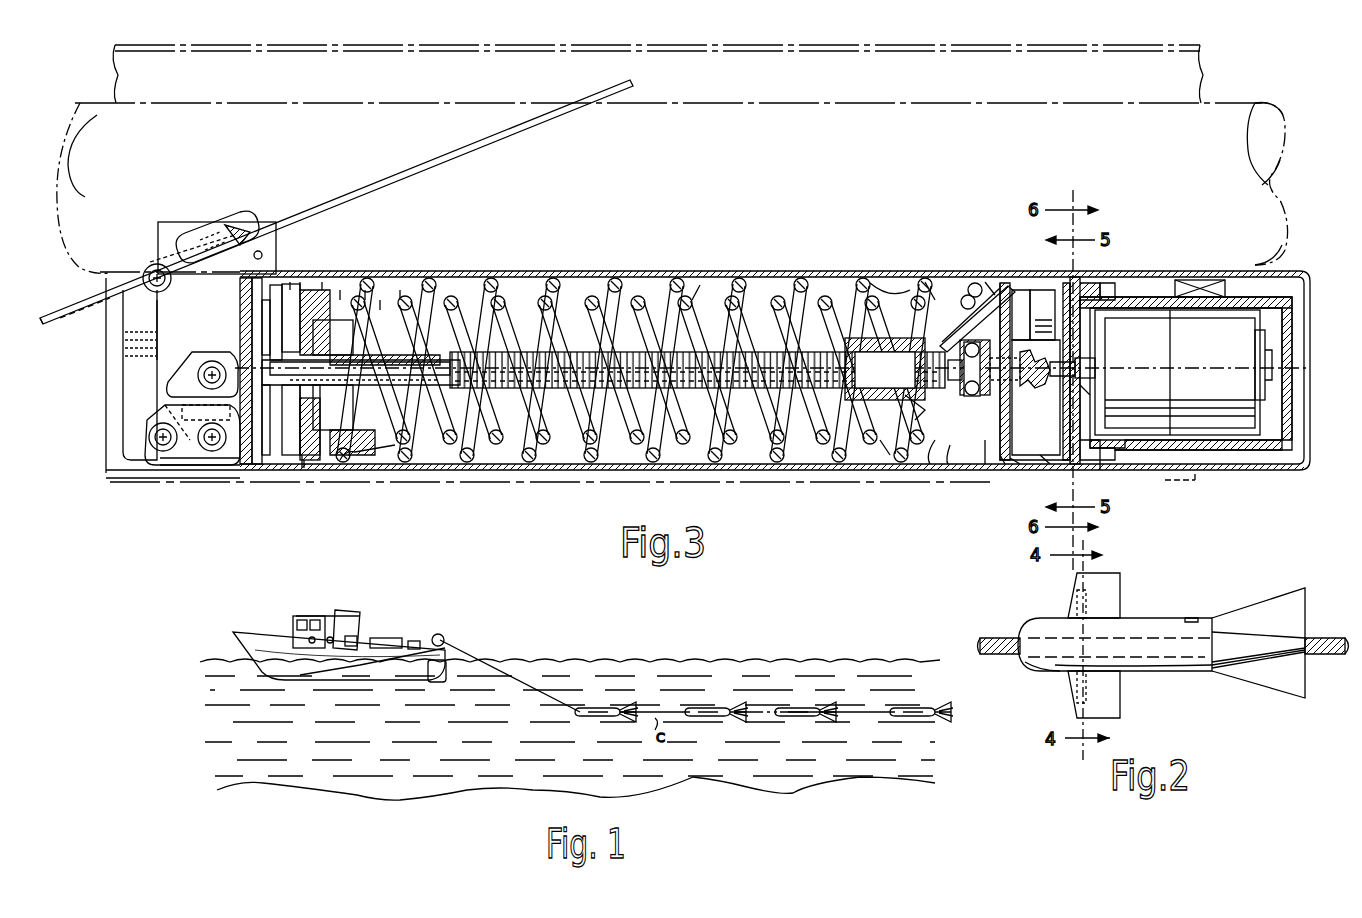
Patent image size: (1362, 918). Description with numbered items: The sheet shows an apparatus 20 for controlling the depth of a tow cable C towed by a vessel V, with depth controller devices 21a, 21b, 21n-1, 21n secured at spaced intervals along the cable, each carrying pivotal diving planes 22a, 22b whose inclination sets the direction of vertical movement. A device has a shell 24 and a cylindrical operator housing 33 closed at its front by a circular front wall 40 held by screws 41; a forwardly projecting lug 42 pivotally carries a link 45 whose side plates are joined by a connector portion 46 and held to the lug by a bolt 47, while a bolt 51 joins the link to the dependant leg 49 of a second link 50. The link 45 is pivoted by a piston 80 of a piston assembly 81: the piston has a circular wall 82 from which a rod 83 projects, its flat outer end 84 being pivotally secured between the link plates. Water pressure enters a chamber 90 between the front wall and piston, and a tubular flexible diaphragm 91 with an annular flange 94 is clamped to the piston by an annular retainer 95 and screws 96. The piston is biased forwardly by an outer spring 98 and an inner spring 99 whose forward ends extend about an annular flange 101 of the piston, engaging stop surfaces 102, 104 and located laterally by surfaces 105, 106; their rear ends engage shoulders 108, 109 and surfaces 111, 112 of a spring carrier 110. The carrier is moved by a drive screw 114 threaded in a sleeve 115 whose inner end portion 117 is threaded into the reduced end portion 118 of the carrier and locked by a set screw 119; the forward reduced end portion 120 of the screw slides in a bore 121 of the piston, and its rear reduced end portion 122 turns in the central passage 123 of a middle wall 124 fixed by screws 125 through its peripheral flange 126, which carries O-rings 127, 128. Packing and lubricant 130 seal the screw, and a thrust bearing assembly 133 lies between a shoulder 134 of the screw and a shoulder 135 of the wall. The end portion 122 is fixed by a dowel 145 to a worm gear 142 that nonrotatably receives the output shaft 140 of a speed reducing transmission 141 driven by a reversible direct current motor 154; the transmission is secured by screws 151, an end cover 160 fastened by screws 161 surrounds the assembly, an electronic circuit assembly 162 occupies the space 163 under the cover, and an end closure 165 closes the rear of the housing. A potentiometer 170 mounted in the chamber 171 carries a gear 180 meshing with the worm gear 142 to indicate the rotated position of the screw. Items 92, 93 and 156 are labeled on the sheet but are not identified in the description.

In FIG. 3, the tow cable C is at (1210, 120).
In FIG. 1, the apparatus 20 is at (487, 645).
In FIG. 1, the depth controller device 21a is at (600, 718).
In FIG. 1, the depth controller device 21b is at (705, 718).
In FIG. 1, the depth controller device 21n-1 is at (798, 718).
In FIG. 1, the depth controller device 21n is at (910, 718).
In FIG. 1, the towing vessel V is at (255, 630).
In FIG. 3, the diving plane 22a is at (322, 210).
In FIG. 2, the diving plane 22a is at (1120, 590).
In FIG. 2, the diving plane 22b is at (1120, 704).
In FIG. 2, the gear 180 is at (1045, 660).
In FIG. 3, the shell 24 is at (203, 492).
In FIG. 3, the cylindrical operator housing 33 is at (593, 472).
In FIG. 3, the front bulkhead 40 is at (258, 472).
In FIG. 3, the screws 41 is at (272, 472).
In FIG. 3, the forwardly projecting lug 42 is at (234, 474).
In FIG. 3, the link 45 is at (180, 395).
In FIG. 3, the connector portion 46 is at (158, 422).
In FIG. 3, the bolt 47 is at (205, 452).
In FIG. 3, the dependant leg 49 is at (118, 398).
In FIG. 3, the link 50 is at (118, 328).
In FIG. 3, the bolt 51 is at (155, 448).
In FIG. 3, the piston 80 is at (318, 470).
In FIG. 3, the piston assembly 81 is at (303, 480).
In FIG. 3, the circular wall 82 is at (313, 412).
In FIG. 3, the piston rod 83 is at (262, 360).
In FIG. 3, the flat outer end 84 is at (212, 358).
In FIG. 3, the chamber 90 is at (296, 284).
In FIG. 3, the tubular flexible diaphragm 91 is at (310, 284).
In FIG. 3, the plate 92 is at (268, 295).
In FIG. 3, the bearing 93 is at (305, 322).
In FIG. 3, the annular flange 94 is at (328, 284).
In FIG. 3, the annular retainer 95 is at (301, 420).
In FIG. 3, the screws 96 is at (292, 456).
In FIG. 3, the outer spring 98 is at (676, 282).
In FIG. 3, the inner spring 99 is at (695, 300).
In FIG. 3, the annular flange 101 is at (333, 337).
In FIG. 3, the outer annular stop surface 102 is at (352, 290).
In FIG. 3, the inner annular stop surface 104 is at (402, 288).
In FIG. 3, the annular surface 105 is at (375, 290).
In FIG. 3, the annular surface 106 is at (372, 310).
In FIG. 3, the shoulder 108 is at (994, 282).
In FIG. 3, the shoulder 109 is at (965, 295).
In FIG. 3, the spring carrier 110 is at (953, 320).
In FIG. 3, the surface 111 is at (976, 282).
In FIG. 3, the surface 112 is at (935, 290).
In FIG. 3, the drive screw 114 is at (748, 397).
In FIG. 3, the sleeve 115 is at (873, 442).
In FIG. 3, the inner end portion 117 is at (925, 410).
In FIG. 3, the inner reduced end portion 118 is at (900, 332).
In FIG. 3, the set screw 119 is at (890, 288).
In FIG. 3, the forward reduced end portion 120 is at (367, 450).
In FIG. 3, the bore 121 is at (400, 355).
In FIG. 3, the rear reduced end portion 122 is at (1035, 386).
In FIG. 3, the central passage 123 is at (968, 395).
In FIG. 3, the middle wall 124 is at (988, 468).
In FIG. 3, the screws 125 is at (1022, 470).
In FIG. 3, the annular peripheral flange 126 is at (1045, 455).
In FIG. 3, the O-ring 127 is at (1005, 470).
In FIG. 3, the O-ring 128 is at (1060, 468).
In FIG. 3, the packing and lubricant 130 is at (983, 357).
In FIG. 3, the thrust bearing assembly 133 is at (935, 468).
In FIG. 3, the annular shoulder 134 is at (972, 365).
In FIG. 3, the annular shoulder 135 is at (965, 468).
In FIG. 3, the output shaft 140 is at (1090, 368).
In FIG. 3, the speed reducing transmission 141 is at (1140, 312).
In FIG. 3, the worm gear 142 is at (1085, 392).
In FIG. 3, the dowel 145 is at (1035, 371).
In FIG. 3, the screws 151 is at (1100, 460).
In FIG. 3, the direct current reversible motor 154 is at (1230, 318).
In FIG. 3, the partition 156 is at (1076, 470).
In FIG. 3, the end cover 160 is at (1248, 452).
In FIG. 3, the screws 161 is at (1110, 284).
In FIG. 3, the electronic circuit assembly 162 is at (1200, 280).
In FIG. 3, the space 163 is at (1090, 283).
In FIG. 3, the end closure 165 is at (1168, 488).
In FIG. 3, the potentiometer 170 is at (1042, 290).
In FIG. 3, the chamber 171 is at (1020, 290).